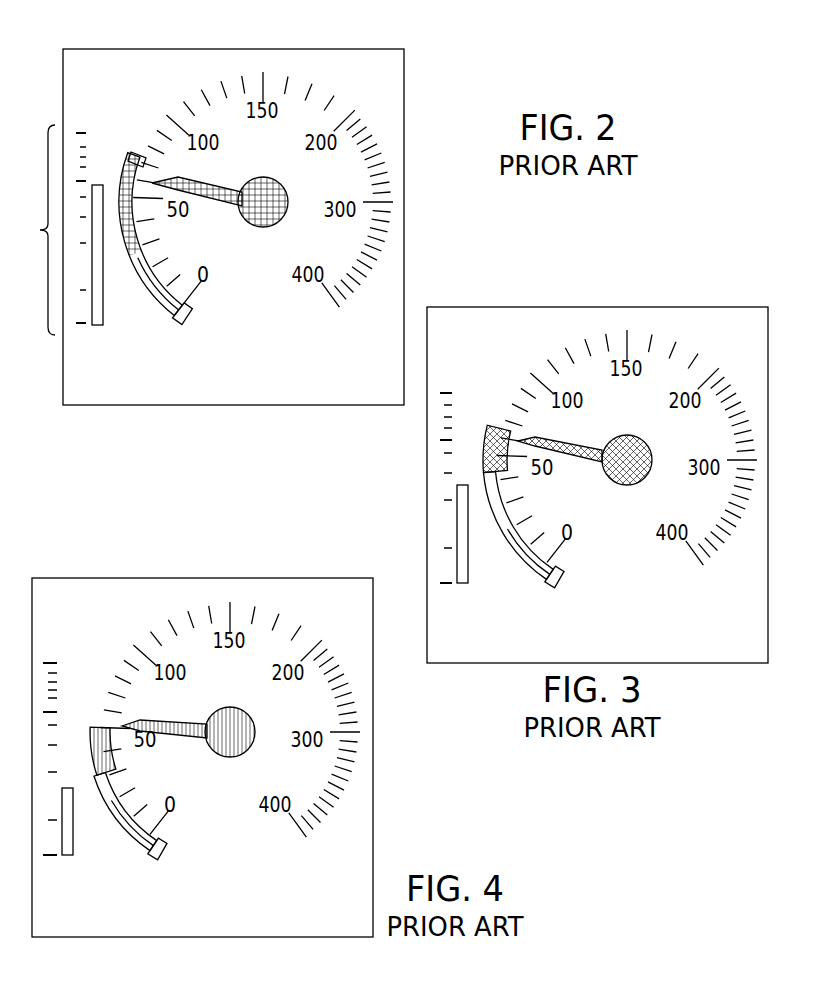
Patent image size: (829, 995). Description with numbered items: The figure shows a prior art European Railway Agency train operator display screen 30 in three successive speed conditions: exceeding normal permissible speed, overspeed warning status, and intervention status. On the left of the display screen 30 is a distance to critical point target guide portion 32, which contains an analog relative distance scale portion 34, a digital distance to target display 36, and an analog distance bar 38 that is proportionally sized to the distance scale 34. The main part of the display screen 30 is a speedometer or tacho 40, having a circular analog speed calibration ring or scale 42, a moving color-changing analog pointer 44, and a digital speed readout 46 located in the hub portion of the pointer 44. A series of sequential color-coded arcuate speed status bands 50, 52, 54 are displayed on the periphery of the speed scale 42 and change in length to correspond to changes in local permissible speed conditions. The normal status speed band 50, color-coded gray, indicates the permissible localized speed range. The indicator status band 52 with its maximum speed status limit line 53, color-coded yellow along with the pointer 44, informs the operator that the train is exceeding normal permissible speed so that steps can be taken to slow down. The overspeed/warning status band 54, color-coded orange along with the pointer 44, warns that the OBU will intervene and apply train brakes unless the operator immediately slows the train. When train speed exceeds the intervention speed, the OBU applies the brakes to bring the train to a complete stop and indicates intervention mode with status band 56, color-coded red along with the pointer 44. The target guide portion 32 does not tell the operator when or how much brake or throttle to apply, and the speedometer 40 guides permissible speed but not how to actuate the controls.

In FIG. 2, the display screen 30 is at (413, 223).
In FIG. 3, the display screen 30 is at (672, 669).
In FIG. 2, the distance to critical point target guide portion 32 is at (63, 218).
In FIG. 2, the analog relative distance scale portion 34 is at (78, 133).
In FIG. 2, the digital distance to target display 36 is at (105, 112).
In FIG. 2, the analog distance bar 38 is at (98, 322).
In FIG. 2, the speedometer 40 is at (250, 222).
In FIG. 3, the speedometer 40 is at (571, 433).
In FIG. 4, the speedometer 40 is at (239, 691).
In FIG. 2, the circular analog speed calibration ring 42 is at (337, 112).
In FIG. 2, the analog pointer 44 is at (185, 180).
In FIG. 3, the analog pointer 44 is at (587, 442).
In FIG. 4, the analog pointer 44 is at (193, 722).
In FIG. 2, the digital speed readout 46 is at (264, 227).
In FIG. 2, the normal status speed band 50 is at (172, 313).
In FIG. 2, the indicator status band 52 is at (123, 177).
In FIG. 2, the maximum speed status limit line 53 is at (143, 157).
In FIG. 3, the overspeed/warning status band 54 is at (490, 426).
In FIG. 4, the intervention mode status band 56 is at (90, 727).